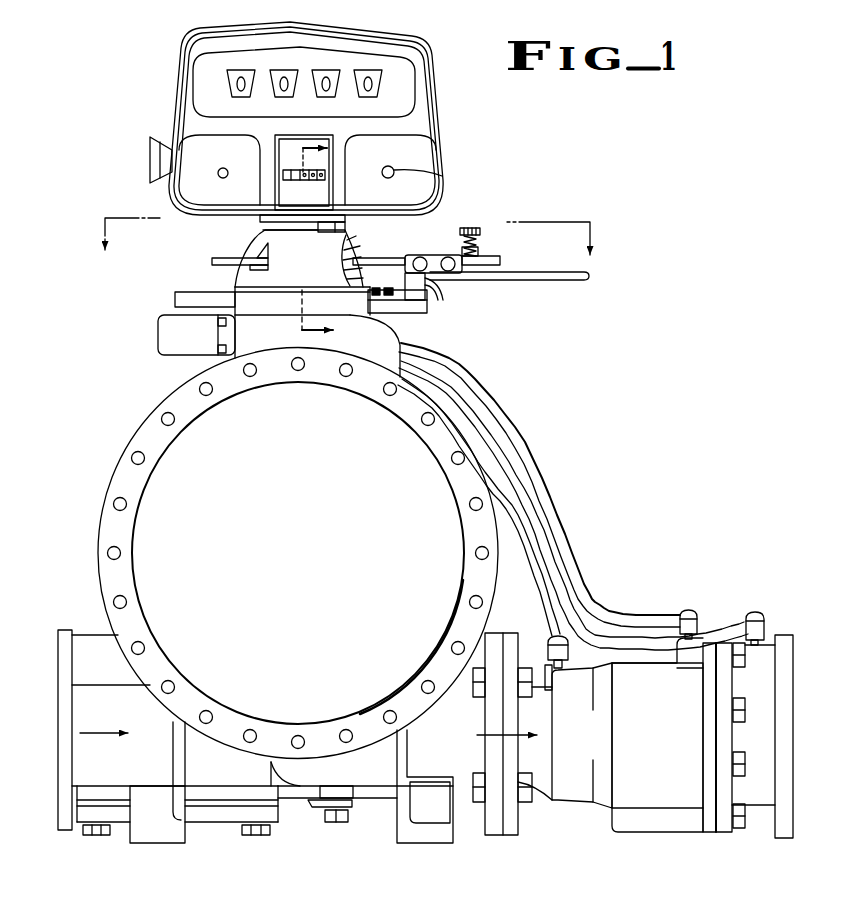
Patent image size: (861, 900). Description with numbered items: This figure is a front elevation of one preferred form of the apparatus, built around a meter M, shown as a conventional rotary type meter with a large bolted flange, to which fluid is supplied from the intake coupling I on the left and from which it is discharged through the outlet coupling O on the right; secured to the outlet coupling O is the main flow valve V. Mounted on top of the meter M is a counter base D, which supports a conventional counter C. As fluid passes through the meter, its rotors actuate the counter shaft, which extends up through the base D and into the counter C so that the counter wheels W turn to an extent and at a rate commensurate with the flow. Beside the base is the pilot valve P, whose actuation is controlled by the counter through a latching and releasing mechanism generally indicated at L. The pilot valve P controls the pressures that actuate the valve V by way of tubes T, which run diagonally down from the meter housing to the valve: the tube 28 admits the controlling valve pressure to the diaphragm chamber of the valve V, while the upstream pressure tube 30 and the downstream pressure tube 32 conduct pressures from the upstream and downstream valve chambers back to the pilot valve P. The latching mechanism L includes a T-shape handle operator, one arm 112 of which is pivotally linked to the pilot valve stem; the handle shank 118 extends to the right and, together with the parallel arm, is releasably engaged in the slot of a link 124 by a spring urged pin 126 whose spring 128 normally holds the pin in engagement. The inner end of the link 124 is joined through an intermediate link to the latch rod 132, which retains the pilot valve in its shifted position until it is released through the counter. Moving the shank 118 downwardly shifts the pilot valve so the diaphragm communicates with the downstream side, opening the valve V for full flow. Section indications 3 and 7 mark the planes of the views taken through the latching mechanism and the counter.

The counter C is at (447, 128).
The counter wheels W is at (281, 178).
The counter base D is at (252, 243).
The pilot valve P is at (174, 293).
The meter M is at (113, 472).
The tubes T is at (581, 516).
The latching and releasing mechanism L is at (428, 248).
The intake coupling I is at (63, 771).
The outlet coupling O is at (466, 798).
The main flow valve V is at (653, 838).
The section line 3- 3 is at (343, 238).
The section line 7- 7 is at (306, 245).
The tube 28 is at (639, 615).
The upstream pressure tube 30 is at (537, 605).
The downstream pressure tube 32 is at (720, 623).
The arm 112 is at (440, 293).
The handle shank 118 is at (547, 281).
The link 124 is at (500, 262).
The spring urged pin 126 is at (468, 227).
The spring 128 is at (480, 253).
The latch rod 132 is at (393, 252).